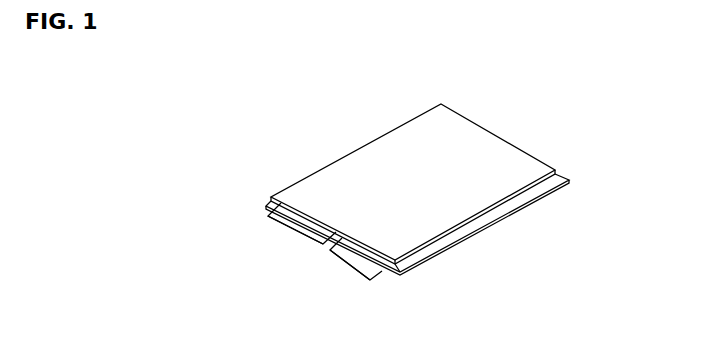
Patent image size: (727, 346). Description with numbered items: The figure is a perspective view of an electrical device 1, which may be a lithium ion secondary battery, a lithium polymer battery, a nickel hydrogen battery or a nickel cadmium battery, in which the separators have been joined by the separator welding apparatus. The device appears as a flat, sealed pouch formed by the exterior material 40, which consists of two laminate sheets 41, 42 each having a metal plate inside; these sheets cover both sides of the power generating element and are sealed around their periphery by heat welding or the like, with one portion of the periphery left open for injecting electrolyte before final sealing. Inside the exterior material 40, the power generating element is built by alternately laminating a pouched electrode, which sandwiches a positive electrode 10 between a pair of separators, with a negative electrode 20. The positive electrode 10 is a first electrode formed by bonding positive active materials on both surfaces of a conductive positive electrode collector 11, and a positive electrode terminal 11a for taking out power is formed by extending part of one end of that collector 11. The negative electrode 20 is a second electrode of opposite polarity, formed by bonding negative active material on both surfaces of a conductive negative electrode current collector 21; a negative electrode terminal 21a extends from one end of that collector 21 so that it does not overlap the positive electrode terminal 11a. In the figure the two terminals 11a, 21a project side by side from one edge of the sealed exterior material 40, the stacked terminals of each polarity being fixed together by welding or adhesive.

The electrical device 1 is at (393, 213).
The positive electrode 10 is at (213, 265).
The positive electrode collector 11 is at (267, 216).
The positive electrode terminal 11a is at (297, 234).
The negative electrode 20 is at (277, 303).
The negative electrode current collector 21 is at (327, 257).
The negative electrode terminal 21a is at (358, 273).
The exterior material 40 is at (596, 143).
The laminate sheet 41 is at (546, 163).
The laminate sheet 42 is at (545, 197).